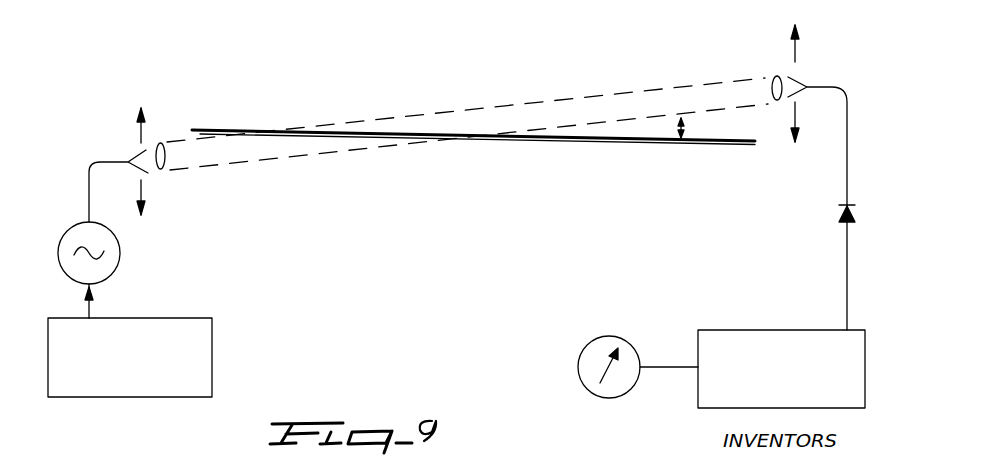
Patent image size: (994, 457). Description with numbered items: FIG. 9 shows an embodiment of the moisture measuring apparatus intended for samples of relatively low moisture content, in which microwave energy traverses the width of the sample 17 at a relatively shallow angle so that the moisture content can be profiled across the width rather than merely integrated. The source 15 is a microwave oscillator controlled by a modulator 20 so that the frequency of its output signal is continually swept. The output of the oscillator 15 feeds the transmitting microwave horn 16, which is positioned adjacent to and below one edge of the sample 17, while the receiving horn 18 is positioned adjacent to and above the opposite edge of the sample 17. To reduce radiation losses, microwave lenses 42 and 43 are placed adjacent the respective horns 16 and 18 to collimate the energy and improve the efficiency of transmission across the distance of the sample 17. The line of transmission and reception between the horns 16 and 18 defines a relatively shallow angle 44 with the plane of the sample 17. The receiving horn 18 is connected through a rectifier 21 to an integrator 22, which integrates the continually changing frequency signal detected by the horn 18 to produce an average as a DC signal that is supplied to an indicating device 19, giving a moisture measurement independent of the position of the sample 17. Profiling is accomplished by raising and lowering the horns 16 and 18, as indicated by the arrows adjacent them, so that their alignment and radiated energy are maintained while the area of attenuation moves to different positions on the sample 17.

The source 15 is at (119, 267).
The transmitting microwave horn 16 is at (140, 153).
The sample 17 is at (633, 141).
The receiving horn 18 is at (800, 85).
The indicating device 19 is at (615, 336).
The modulator 20 is at (157, 317).
The rectifier 21 is at (838, 212).
The integrator 22 is at (768, 330).
The microwave lens 42 is at (160, 169).
The microwave lens 43 is at (777, 72).
The angle 44 is at (684, 128).